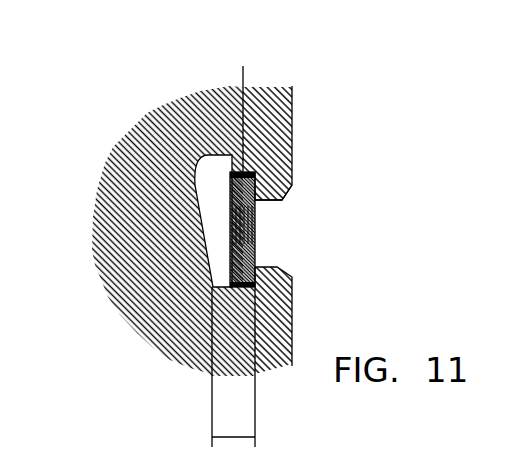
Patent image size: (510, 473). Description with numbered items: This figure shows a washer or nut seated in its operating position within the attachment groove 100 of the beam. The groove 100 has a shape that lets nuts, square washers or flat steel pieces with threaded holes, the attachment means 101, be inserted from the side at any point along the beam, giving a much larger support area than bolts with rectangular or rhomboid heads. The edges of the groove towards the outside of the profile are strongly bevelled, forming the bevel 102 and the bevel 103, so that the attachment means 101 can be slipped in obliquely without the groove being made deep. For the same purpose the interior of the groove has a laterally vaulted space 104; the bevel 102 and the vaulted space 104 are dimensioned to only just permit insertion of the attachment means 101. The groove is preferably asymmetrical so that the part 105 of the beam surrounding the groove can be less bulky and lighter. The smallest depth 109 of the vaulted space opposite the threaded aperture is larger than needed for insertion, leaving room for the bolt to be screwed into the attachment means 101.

The attachment groove 100 is at (210, 157).
The attachment means 101 is at (252, 249).
The bevelled edge 102 is at (290, 274).
The bevel 103 is at (283, 196).
The vaulted space 104 is at (198, 147).
The part of the beam surrounding the groove 105 is at (243, 66).
The smallest depth of the vaulted space 109 is at (233, 357).